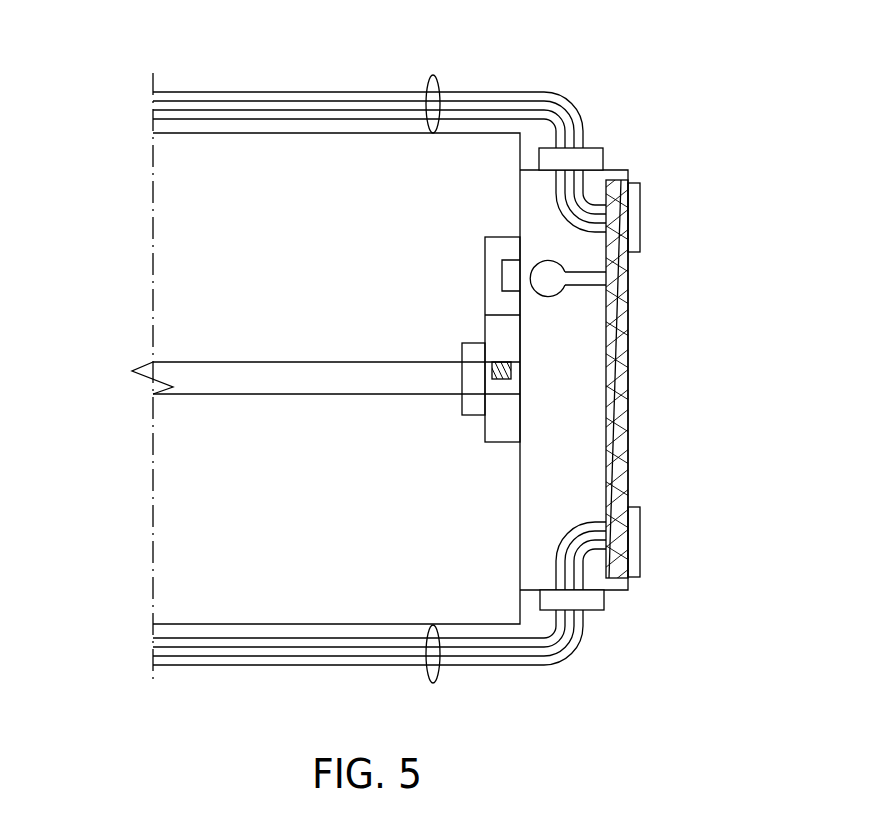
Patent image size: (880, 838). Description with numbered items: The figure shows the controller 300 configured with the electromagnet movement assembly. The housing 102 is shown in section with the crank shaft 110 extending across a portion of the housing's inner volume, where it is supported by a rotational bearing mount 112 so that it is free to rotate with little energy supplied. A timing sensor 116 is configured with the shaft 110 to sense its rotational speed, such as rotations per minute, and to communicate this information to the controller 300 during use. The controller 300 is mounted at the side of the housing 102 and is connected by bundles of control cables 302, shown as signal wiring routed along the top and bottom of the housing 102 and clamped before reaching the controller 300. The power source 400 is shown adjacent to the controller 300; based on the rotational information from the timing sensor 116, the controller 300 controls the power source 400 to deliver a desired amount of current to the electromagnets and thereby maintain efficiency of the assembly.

The housing 102 is at (153, 193).
The crank shaft 110 is at (302, 362).
The rotational bearing mount 112 is at (475, 342).
The timing sensor 116 is at (503, 237).
The controller 300 is at (582, 442).
The control cables 302 is at (433, 75).
The power source 400 is at (640, 223).